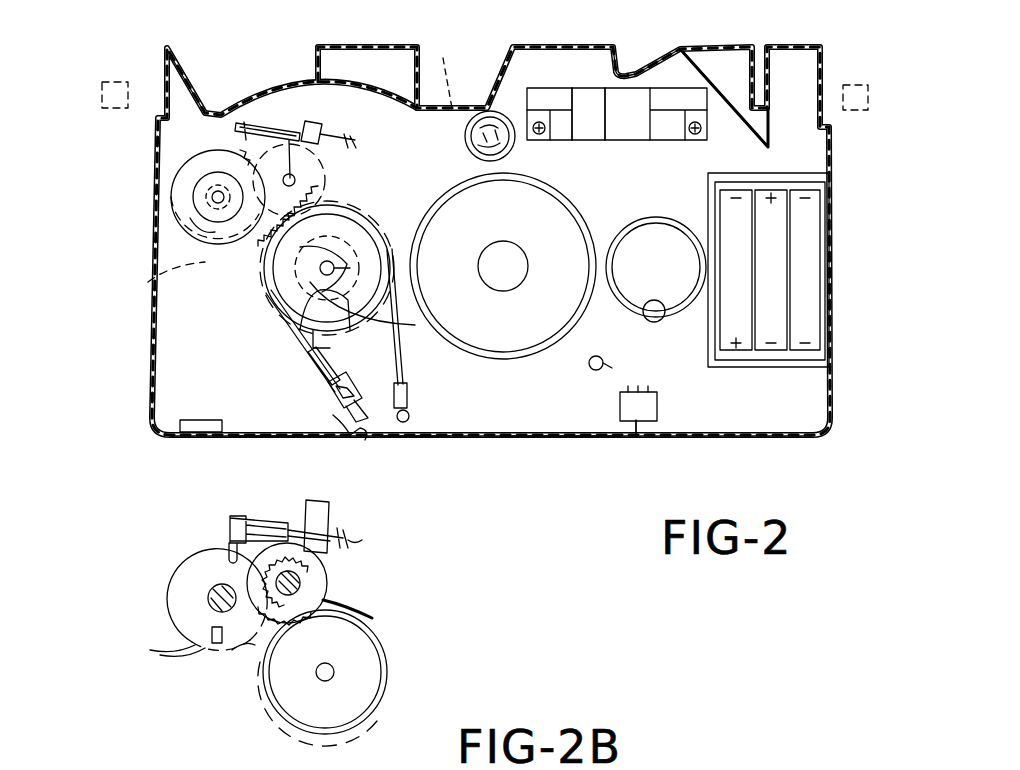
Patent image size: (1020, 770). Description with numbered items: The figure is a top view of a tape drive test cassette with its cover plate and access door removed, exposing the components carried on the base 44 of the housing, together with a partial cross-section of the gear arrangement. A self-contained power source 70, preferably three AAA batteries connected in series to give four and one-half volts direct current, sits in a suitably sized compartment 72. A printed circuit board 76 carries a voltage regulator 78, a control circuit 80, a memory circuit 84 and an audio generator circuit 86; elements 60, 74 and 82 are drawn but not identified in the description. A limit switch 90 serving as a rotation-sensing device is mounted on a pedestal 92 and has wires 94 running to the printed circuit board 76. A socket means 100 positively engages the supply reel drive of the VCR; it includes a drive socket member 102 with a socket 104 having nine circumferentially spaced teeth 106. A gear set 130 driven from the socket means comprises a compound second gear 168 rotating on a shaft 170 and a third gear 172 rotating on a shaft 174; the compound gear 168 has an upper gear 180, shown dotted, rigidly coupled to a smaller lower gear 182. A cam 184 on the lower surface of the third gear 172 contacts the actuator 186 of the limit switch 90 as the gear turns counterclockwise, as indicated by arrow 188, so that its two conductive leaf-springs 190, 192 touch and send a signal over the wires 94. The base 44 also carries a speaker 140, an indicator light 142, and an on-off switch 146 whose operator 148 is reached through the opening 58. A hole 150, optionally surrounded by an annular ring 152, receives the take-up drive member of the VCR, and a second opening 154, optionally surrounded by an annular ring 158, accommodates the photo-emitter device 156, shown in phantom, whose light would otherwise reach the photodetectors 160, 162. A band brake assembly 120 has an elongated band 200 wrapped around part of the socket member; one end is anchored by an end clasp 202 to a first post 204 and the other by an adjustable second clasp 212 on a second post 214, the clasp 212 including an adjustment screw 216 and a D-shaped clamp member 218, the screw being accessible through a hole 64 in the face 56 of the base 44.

In FIG. 2, the base 44 is at (820, 410).
In FIG. 2, the face 56 is at (465, 437).
In FIG. 2, the opening 58 is at (640, 438).
In FIG. 2, the foot tab 60 is at (195, 437).
In FIG. 2, the hole 64 is at (390, 433).
In FIG. 2, the electrical power source 70 is at (812, 213).
In FIG. 2, the compartment 72 is at (790, 172).
In FIG. 2, the batteries 74 is at (805, 268).
In FIG. 2, the printed circuit board 76 is at (550, 88).
In FIG. 2, the voltage regulator 78 is at (660, 90).
In FIG. 2, the control circuit 80 is at (535, 100).
In FIG. 2, the screw 82 is at (558, 130).
In FIG. 2, the memory circuit 84 is at (592, 135).
In FIG. 2, the audio generator circuit 86 is at (660, 132).
In FIG. 2, the limit switch 90 is at (262, 118).
In FIG. 2, the pedestal 92 is at (310, 120).
In FIG. 2, the wires 94 is at (372, 124).
In FIG. 2B, the wires 94 is at (345, 537).
In FIG. 2, the socket means 100 is at (258, 298).
In FIG. 2, the drive socket member 102 is at (420, 318).
In FIG. 2B, the drive socket member 102 is at (370, 692).
In FIG. 2, the socket 104 is at (275, 270).
In FIG. 2, the teeth 106 is at (352, 345).
In FIG. 2, the band brake assembly 120 is at (306, 378).
In FIG. 2, the set of gears 130 is at (208, 226).
In FIG. 2, the speaker 140 is at (510, 352).
In FIG. 2, the indicator light 142 is at (604, 360).
In FIG. 2, the on-off switch 146 is at (658, 412).
In FIG. 2, the operator 148 is at (615, 436).
In FIG. 2, the hole 150 is at (656, 316).
In FIG. 2, the annular ring 152 is at (660, 228).
In FIG. 2, the second opening 154 is at (473, 148).
In FIG. 2, the photo-emitter device 156 is at (443, 67).
In FIG. 2, the annular ring 158 is at (470, 140).
In FIG. 2, the photodetector 160 is at (117, 82).
In FIG. 2, the photodetector 162 is at (858, 85).
In FIG. 2, the compound second gear 168 is at (305, 181).
In FIG. 2B, the compound second gear 168 is at (330, 594).
In FIG. 2, the shaft 170 is at (235, 118).
In FIG. 2, the third gear 172 is at (190, 175).
In FIG. 2, the shaft 174 is at (210, 197).
In FIG. 2B, the upper gear 180 is at (327, 573).
In FIG. 2B, the lower gear 182 is at (372, 618).
In FIG. 2, the cam 184 is at (144, 282).
In FIG. 2B, the cam 184 is at (162, 668).
In FIG. 2B, the actuator 186 is at (205, 558).
In FIG. 2B, the arrow 188 is at (250, 660).
In FIG. 2B, the conductive leaf-spring 190 is at (232, 518).
In FIG. 2B, the conductive leaf-spring 192 is at (285, 528).
In FIG. 2, the elongated band 200 is at (388, 312).
In FIG. 2, the end clasp 202 is at (410, 395).
In FIG. 2, the first post 204 is at (412, 416).
In FIG. 2, the adjustable second clasp 212 is at (345, 412).
In FIG. 2, the second post 214 is at (358, 378).
In FIG. 2, the adjustment screw 216 is at (342, 433).
In FIG. 2, the D-shaped clamp member 218 is at (300, 437).